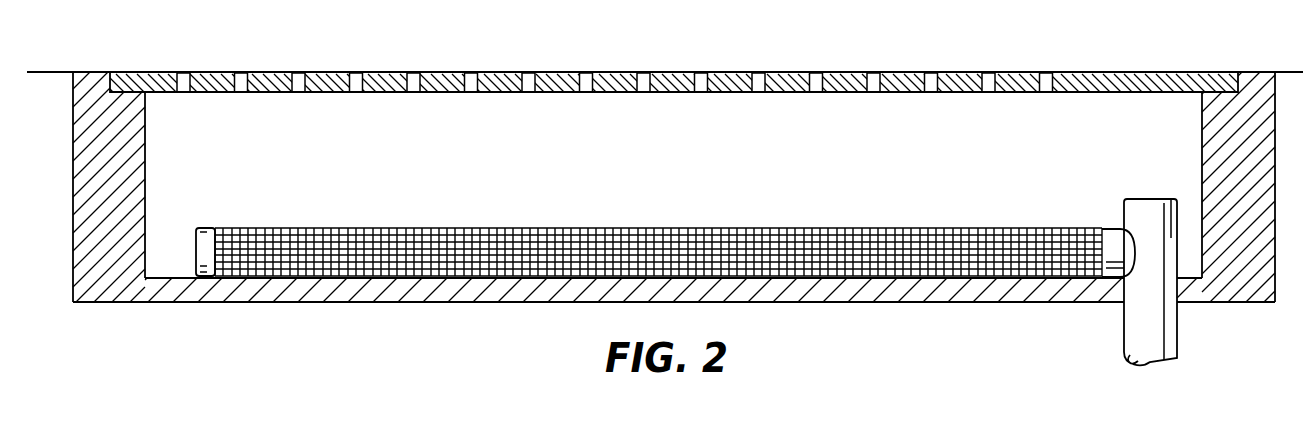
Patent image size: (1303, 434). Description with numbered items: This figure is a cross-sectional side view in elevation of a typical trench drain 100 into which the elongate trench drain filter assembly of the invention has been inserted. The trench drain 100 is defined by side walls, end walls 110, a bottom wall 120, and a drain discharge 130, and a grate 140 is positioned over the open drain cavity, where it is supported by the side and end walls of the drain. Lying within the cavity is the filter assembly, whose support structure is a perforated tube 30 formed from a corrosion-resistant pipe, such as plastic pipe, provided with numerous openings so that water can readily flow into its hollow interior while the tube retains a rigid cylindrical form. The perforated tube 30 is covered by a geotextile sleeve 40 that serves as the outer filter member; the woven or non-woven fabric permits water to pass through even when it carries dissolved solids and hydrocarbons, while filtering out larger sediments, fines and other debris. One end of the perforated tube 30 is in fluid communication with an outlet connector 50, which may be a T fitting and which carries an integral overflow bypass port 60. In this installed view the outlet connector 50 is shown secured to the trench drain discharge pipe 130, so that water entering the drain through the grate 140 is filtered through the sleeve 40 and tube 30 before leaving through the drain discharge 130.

The trench drain 100 is at (665, 186).
The end walls 110 is at (108, 283).
The bottom wall 120 is at (757, 293).
The drain discharge 130 is at (1177, 327).
The grate 140 is at (497, 68).
The geotextile sleeve 40 is at (781, 228).
The perforated tube 30 is at (1118, 228).
The outlet connector 50 is at (1170, 205).
The overflow bypass port 60 is at (1144, 198).